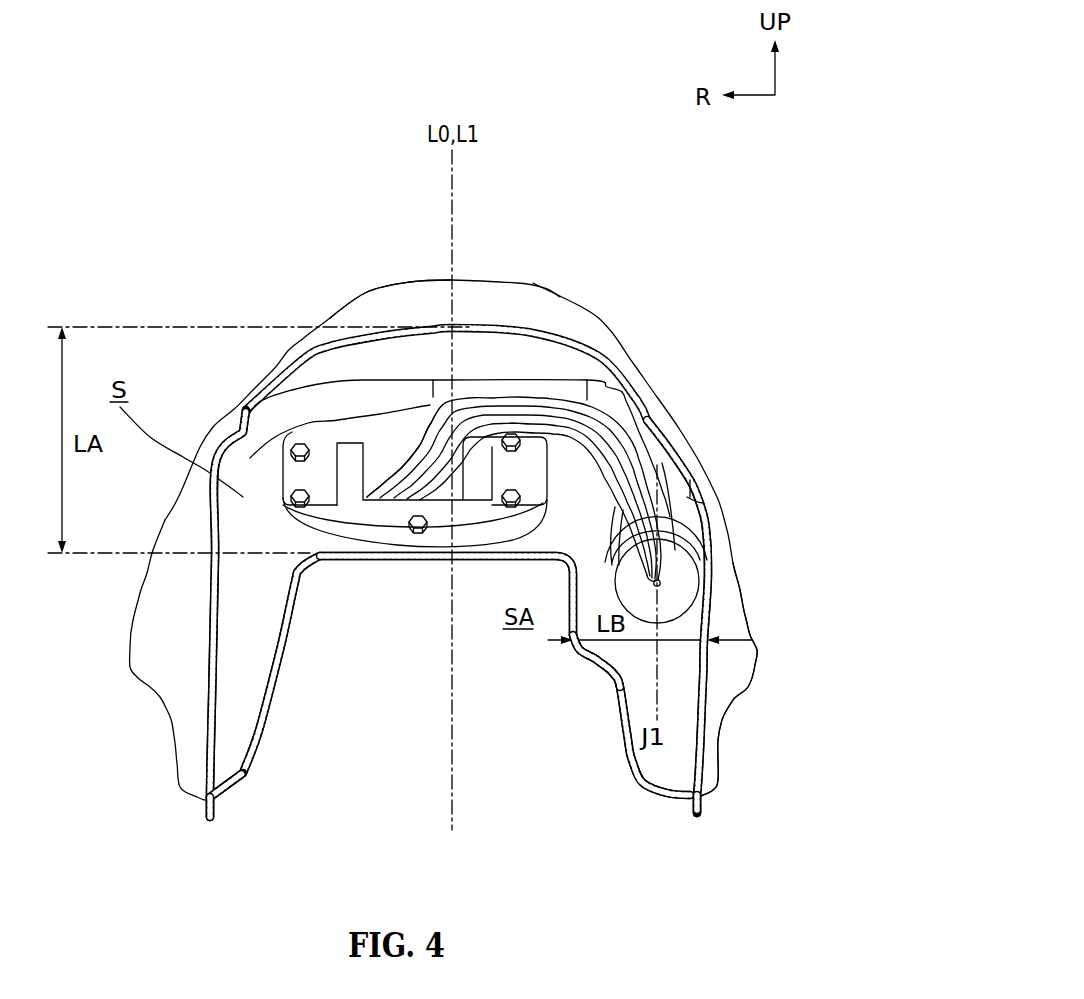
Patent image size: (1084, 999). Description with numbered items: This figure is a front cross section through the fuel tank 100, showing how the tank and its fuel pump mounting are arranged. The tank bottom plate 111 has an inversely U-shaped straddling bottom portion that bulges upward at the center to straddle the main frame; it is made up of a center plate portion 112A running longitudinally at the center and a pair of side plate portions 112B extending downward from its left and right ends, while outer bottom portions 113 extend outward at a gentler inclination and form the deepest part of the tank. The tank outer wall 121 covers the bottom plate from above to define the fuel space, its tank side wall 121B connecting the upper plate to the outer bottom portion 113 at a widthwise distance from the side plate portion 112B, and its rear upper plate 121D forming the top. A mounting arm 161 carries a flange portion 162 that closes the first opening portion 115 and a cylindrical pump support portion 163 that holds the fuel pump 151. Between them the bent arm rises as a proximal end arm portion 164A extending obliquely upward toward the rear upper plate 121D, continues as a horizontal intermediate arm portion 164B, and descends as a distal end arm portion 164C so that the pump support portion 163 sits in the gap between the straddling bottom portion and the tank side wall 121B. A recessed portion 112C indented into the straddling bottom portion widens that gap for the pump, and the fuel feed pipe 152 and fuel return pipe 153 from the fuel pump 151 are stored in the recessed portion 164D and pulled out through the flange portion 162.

The fuel tank 100 is at (523, 172).
The tank bottom plate 111 is at (272, 725).
The center plate portion 112A is at (385, 562).
The side plate portion 112B is at (253, 767).
The recessed portion 112C is at (578, 652).
The outer bottom portion 113 is at (230, 797).
The first opening portion 115 is at (343, 460).
The tank outer wall 121 is at (210, 407).
The tank side wall 121B is at (211, 622).
The rear upper plate 121D is at (363, 316).
The fuel pump 151 is at (690, 600).
The fuel feed pipe 152 is at (675, 548).
The fuel return pipe 153 is at (650, 443).
The mounting arm 161 is at (615, 456).
The flange portion 162 is at (350, 483).
The pump support portion 163 is at (690, 512).
The proximal end arm portion 164A is at (400, 385).
The intermediate arm portion 164B is at (503, 380).
The distal end arm portion 164C is at (597, 396).
The recessed portion 164D is at (405, 437).